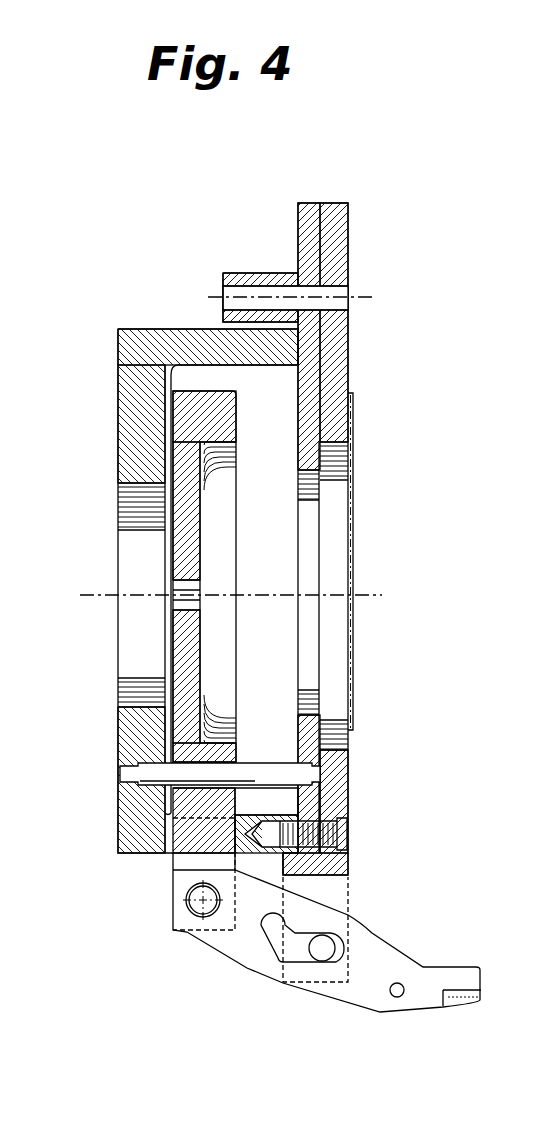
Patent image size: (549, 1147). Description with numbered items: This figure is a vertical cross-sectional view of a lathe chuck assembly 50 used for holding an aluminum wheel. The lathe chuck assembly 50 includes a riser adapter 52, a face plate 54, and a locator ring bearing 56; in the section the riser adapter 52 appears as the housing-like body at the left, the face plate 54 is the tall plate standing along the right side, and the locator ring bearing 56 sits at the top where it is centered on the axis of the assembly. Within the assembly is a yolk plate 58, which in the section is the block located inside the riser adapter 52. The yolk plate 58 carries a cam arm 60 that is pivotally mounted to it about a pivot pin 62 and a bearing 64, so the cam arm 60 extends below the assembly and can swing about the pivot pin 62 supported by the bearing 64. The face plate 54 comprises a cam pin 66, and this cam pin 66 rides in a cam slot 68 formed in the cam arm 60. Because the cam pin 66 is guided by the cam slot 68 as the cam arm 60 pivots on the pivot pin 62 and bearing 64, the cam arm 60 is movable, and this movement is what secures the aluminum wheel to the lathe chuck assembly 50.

The lathe chuck assembly 50 is at (410, 675).
The riser adapter 52 is at (118, 371).
The face plate 54 is at (350, 343).
The locator ring bearing 56 is at (232, 272).
The yolk plate 58 is at (167, 473).
The cam arm 60 is at (377, 927).
The pivot pin 62 is at (222, 920).
The bearing 64 is at (187, 895).
The cam pin 66 is at (323, 953).
The cam slot 68 is at (287, 960).